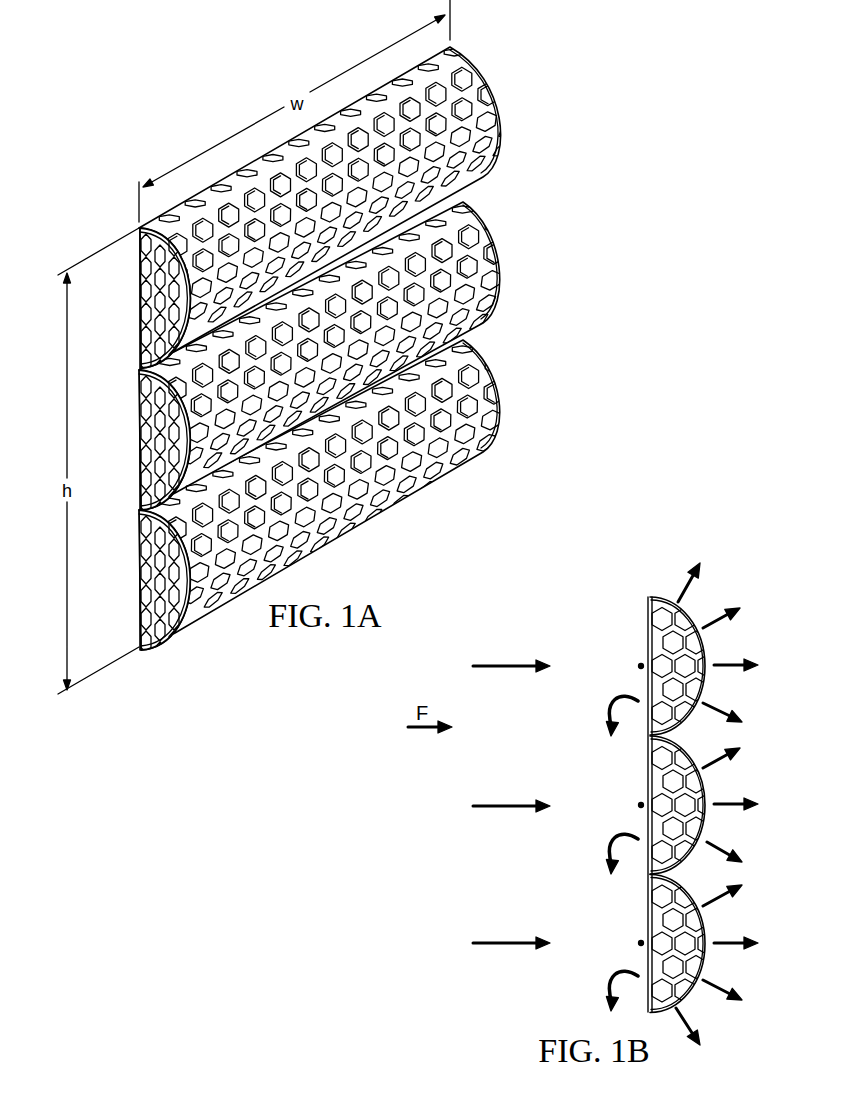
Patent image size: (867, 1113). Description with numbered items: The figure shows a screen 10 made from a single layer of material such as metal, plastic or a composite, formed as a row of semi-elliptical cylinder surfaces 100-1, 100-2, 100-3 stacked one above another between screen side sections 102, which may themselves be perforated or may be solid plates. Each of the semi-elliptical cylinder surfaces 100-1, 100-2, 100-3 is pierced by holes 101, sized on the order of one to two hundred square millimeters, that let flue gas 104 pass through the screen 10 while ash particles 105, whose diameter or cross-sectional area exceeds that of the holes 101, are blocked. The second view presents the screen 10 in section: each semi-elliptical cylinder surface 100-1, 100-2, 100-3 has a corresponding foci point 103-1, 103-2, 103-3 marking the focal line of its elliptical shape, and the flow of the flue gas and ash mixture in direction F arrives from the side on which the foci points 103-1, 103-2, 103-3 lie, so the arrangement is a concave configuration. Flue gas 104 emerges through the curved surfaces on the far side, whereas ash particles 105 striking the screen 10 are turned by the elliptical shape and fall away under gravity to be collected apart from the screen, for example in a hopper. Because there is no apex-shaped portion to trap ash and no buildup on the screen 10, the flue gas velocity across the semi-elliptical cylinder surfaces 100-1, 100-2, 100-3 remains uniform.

In FIG. 1A, the screen 10 is at (428, 515).
In FIG. 1B, the screen 10 is at (563, 613).
In FIG. 1A, the semi-elliptical cylinder surface 100-1 is at (510, 143).
In FIG. 1B, the semi-elliptical cylinder surface 100-1 is at (712, 592).
In FIG. 1A, the semi-elliptical cylinder surface 100-2 is at (512, 282).
In FIG. 1B, the semi-elliptical cylinder surface 100-2 is at (730, 828).
In FIG. 1A, the semi-elliptical cylinder surface 100-3 is at (512, 423).
In FIG. 1B, the semi-elliptical cylinder surface 100-3 is at (714, 1012).
In FIG. 1A, the holes 101 is at (472, 107).
In FIG. 1A, the screen side sections 102 is at (145, 340).
In FIG. 1B, the screen side sections 102 is at (648, 615).
In FIG. 1B, the foci point 103-1 is at (639, 665).
In FIG. 1B, the foci point 103-2 is at (639, 804).
In FIG. 1B, the foci point 103-3 is at (639, 942).
In FIG. 1B, the flue gas 104 is at (742, 627).
In FIG. 1B, the ash particles 105 is at (614, 704).